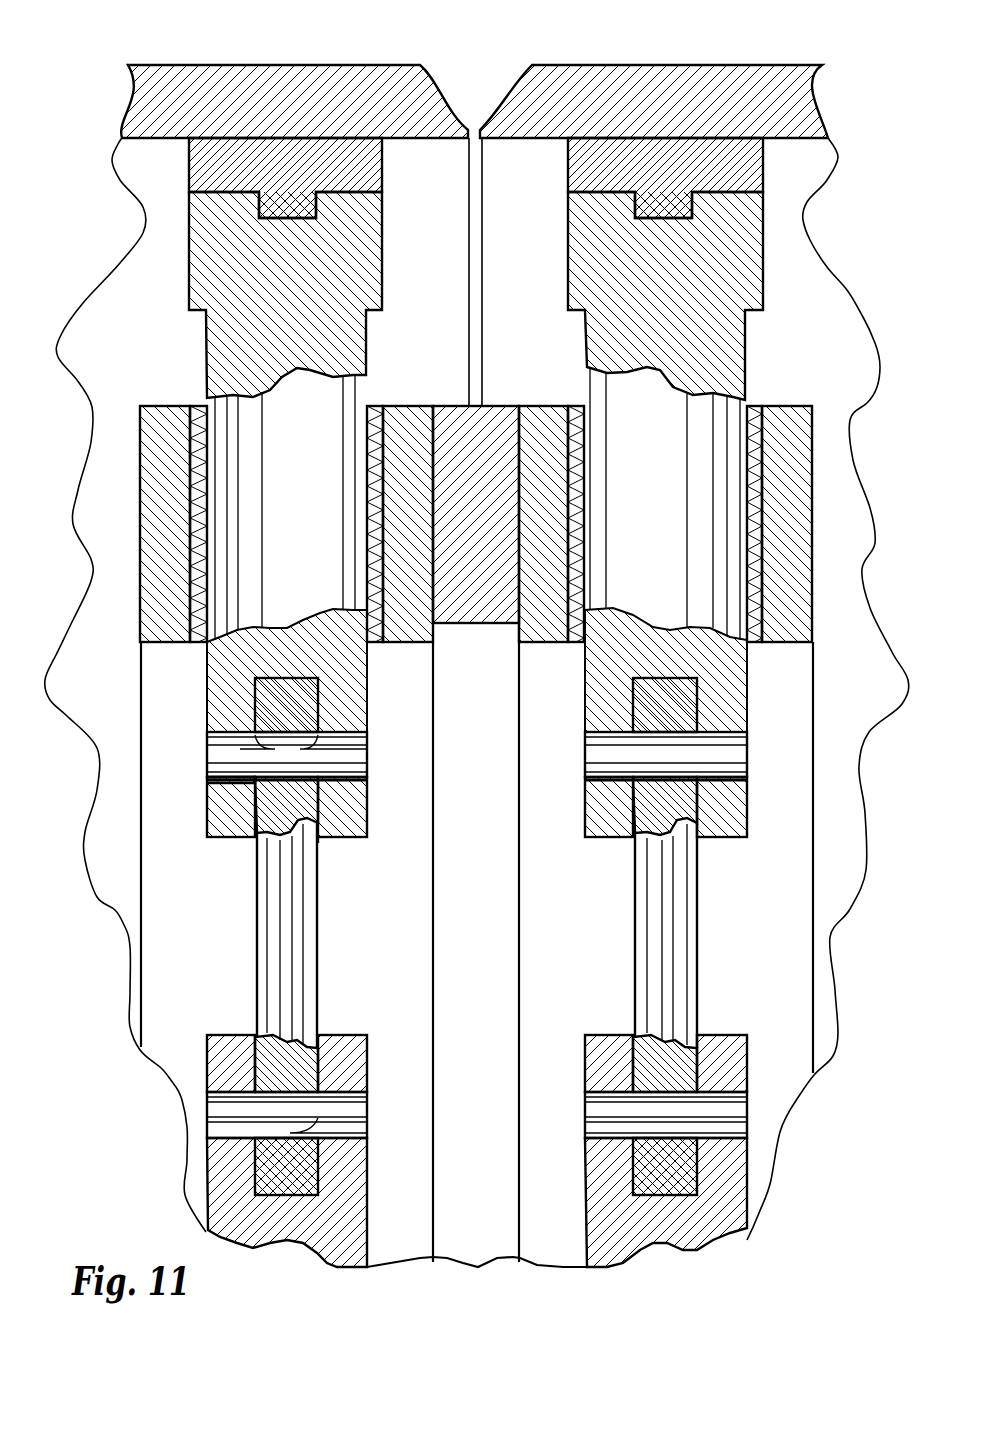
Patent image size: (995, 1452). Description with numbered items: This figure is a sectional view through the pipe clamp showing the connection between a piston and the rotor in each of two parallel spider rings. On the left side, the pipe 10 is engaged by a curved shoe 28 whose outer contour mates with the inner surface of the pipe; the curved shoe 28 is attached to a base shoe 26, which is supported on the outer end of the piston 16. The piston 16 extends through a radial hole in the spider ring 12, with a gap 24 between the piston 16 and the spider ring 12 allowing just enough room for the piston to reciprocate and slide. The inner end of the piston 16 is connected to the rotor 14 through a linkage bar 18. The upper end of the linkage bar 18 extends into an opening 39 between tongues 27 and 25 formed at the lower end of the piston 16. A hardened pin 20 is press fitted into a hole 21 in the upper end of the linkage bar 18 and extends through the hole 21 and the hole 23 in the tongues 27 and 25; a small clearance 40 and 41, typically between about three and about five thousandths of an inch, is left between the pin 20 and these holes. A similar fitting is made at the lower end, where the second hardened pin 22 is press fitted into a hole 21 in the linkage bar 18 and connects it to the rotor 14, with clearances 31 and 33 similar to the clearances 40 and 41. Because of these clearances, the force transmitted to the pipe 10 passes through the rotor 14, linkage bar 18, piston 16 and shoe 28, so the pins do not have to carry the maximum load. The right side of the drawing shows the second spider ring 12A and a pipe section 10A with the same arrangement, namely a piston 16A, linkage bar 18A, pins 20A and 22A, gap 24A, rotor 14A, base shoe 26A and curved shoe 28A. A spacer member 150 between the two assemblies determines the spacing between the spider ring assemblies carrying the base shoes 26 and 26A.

The pipe 10 is at (318, 95).
The pipe section 10A is at (645, 92).
The spider ring 12 is at (172, 610).
The second spider ring 12A is at (790, 448).
The rotor 14 is at (325, 1245).
The rotor 14A is at (705, 1222).
The piston 16 is at (230, 357).
The piston 16A is at (718, 347).
The linkage bar 18 is at (292, 938).
The linkage bar 18A is at (676, 955).
The hardened pin 20 is at (222, 762).
The hardened pin 20A is at (730, 755).
The hole 21 is at (283, 738).
The second hardened pin 22 is at (220, 1112).
The second hardened pin 22A is at (722, 1108).
The hole 23 is at (340, 750).
The gap 24 is at (198, 642).
The gap 24A is at (755, 642).
The tongue 25 is at (357, 808).
The base shoe 26 is at (222, 247).
The base shoe 26A is at (730, 245).
The tongue 27 is at (225, 823).
The curved shoe 28 is at (210, 172).
The curved shoe 28A is at (740, 172).
The clearance 31 is at (350, 1090).
The clearance 33 is at (218, 1090).
The opening 39 is at (320, 838).
The clearance 40 is at (222, 780).
The clearance 41 is at (340, 780).
The spacer member 150 is at (495, 405).